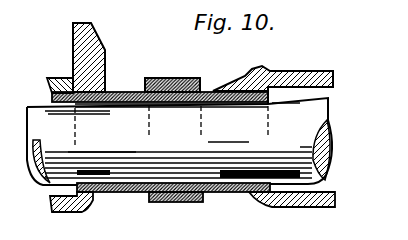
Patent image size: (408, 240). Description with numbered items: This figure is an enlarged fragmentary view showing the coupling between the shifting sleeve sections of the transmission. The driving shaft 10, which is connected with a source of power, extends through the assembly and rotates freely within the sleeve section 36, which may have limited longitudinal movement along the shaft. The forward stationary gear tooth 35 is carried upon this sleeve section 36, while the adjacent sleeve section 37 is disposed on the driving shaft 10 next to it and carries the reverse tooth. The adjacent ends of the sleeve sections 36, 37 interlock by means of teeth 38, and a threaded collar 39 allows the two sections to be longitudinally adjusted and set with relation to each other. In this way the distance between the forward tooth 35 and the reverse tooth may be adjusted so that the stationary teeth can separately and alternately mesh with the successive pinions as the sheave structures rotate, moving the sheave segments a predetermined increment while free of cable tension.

The driving shaft 10 is at (330, 100).
The forward stationary gear tooth 35 is at (88, 36).
The sleeve section 36 is at (226, 89).
The sleeve section 37 is at (119, 92).
The teeth 38 is at (184, 108).
The threaded collar 39 is at (160, 78).